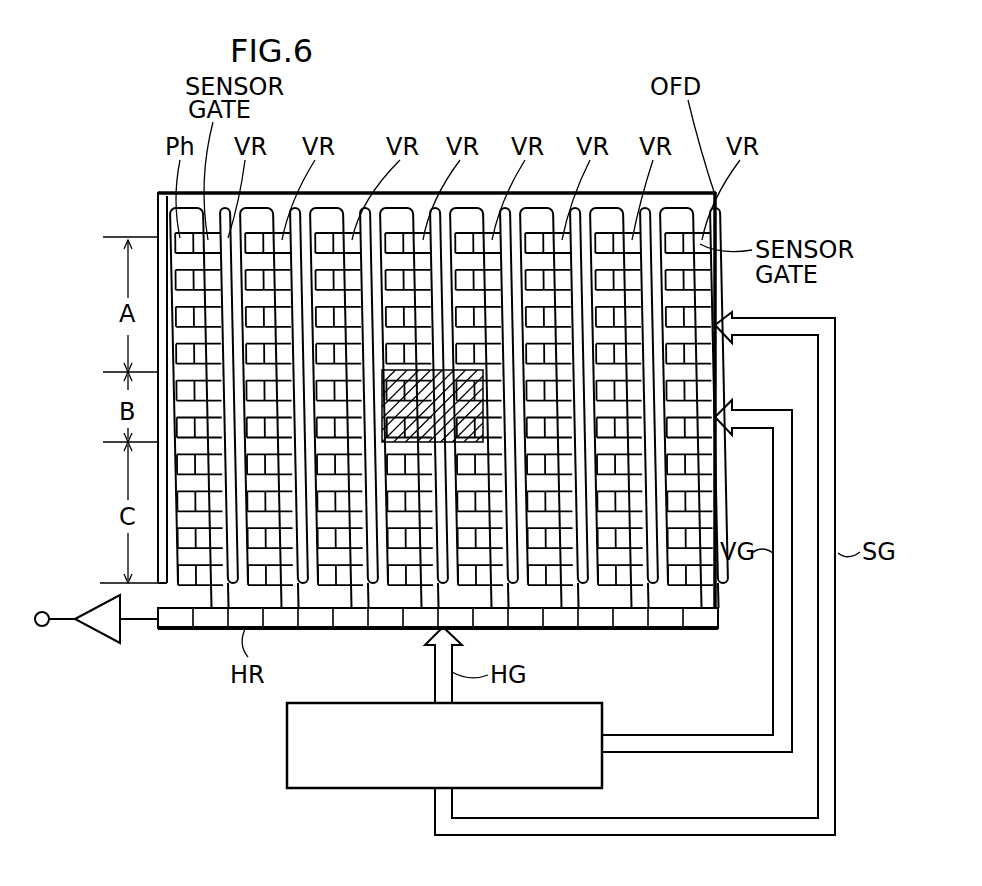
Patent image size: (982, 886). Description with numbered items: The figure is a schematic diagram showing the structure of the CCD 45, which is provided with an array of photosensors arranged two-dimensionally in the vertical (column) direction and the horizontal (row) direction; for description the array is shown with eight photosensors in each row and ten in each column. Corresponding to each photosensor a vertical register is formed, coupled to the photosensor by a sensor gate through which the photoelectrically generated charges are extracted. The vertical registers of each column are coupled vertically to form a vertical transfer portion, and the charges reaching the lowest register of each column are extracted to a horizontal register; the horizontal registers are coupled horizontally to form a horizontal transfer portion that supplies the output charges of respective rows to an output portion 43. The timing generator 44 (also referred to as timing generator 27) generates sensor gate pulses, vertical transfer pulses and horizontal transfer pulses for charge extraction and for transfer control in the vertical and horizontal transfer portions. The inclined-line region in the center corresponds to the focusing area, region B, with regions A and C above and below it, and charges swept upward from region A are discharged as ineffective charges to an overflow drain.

The output portion 43 is at (105, 603).
The CCD 45 is at (735, 220).
The timing generator 44 is at (444, 771).
The timing generator 27 is at (335, 789).